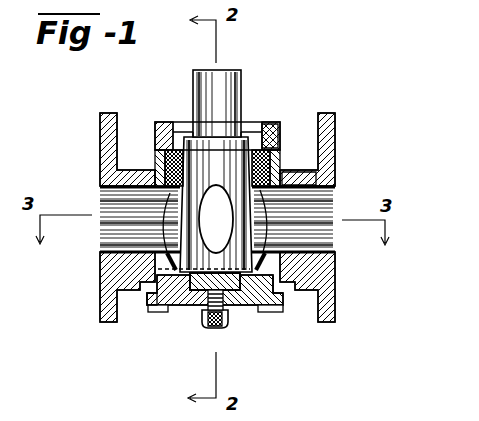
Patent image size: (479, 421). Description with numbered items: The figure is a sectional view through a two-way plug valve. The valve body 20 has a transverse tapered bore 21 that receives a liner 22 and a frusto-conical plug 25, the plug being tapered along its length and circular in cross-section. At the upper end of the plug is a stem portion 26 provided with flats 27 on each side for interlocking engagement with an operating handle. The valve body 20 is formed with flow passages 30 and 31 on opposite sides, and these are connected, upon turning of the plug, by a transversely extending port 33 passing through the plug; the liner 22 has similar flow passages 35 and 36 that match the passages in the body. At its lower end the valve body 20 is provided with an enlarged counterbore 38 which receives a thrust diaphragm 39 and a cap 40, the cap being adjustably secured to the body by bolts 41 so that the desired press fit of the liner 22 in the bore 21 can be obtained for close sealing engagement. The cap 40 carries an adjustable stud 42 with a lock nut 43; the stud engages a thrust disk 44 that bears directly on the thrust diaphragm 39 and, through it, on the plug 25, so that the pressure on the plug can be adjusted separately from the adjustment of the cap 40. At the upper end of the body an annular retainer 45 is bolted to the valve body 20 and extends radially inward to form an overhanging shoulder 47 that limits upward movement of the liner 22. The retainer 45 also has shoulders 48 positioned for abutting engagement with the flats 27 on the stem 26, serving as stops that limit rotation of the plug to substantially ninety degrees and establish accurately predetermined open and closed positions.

The valve body 20 is at (336, 134).
The transverse tapered bore 21 is at (333, 174).
The liner 22 is at (280, 143).
The frusto-conical plug 25 is at (203, 150).
The stem portion 26 is at (220, 80).
The flats 27 is at (243, 88).
The flow passage 30 is at (108, 232).
The flow passage 31 is at (330, 206).
The transversely extending port 33 is at (204, 229).
The flow passage 35 is at (167, 227).
The flow passage 36 is at (265, 228).
The enlarged counterbore 38 is at (286, 290).
The thrust diaphragm 39 is at (262, 312).
The cap 40 is at (150, 298).
The bolts 41 is at (158, 312).
The adjustable stud 42 is at (212, 330).
The lock nut 43 is at (230, 326).
The thrust disk 44 is at (194, 300).
The annular retainer 45 is at (158, 124).
The overhanging shoulder 47 is at (168, 156).
The shoulders 48 is at (256, 120).